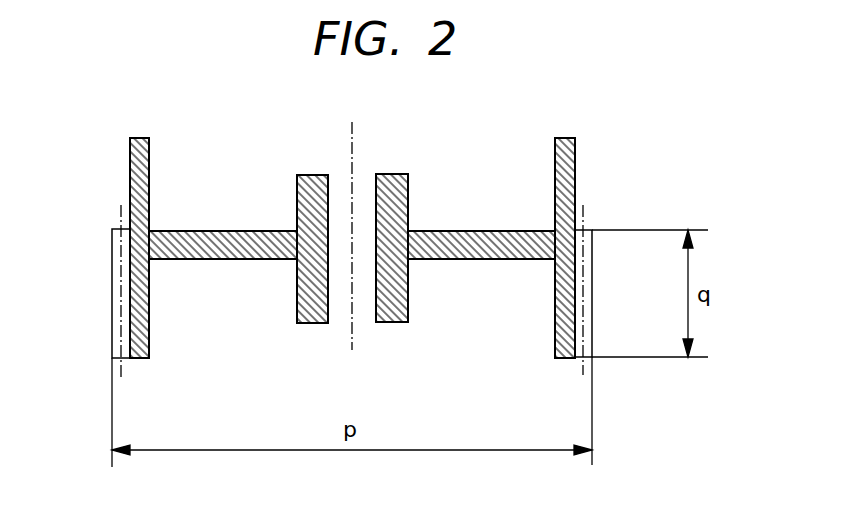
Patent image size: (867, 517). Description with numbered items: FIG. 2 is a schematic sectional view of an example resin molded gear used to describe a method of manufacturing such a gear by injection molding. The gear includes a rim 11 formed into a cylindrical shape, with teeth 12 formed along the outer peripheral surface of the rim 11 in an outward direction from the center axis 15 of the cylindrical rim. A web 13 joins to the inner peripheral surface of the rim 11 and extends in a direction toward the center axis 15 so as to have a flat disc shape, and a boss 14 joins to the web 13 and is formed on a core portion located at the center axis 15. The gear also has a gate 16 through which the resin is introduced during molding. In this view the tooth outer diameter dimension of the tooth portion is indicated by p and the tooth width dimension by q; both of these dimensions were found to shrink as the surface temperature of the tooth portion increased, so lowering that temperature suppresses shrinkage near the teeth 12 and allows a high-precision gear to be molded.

The rim 11 is at (140, 362).
The teeth 12 is at (112, 292).
The web 13 is at (217, 230).
The boss 14 is at (408, 303).
The center axis 15 is at (352, 342).
The gate 16 is at (315, 173).